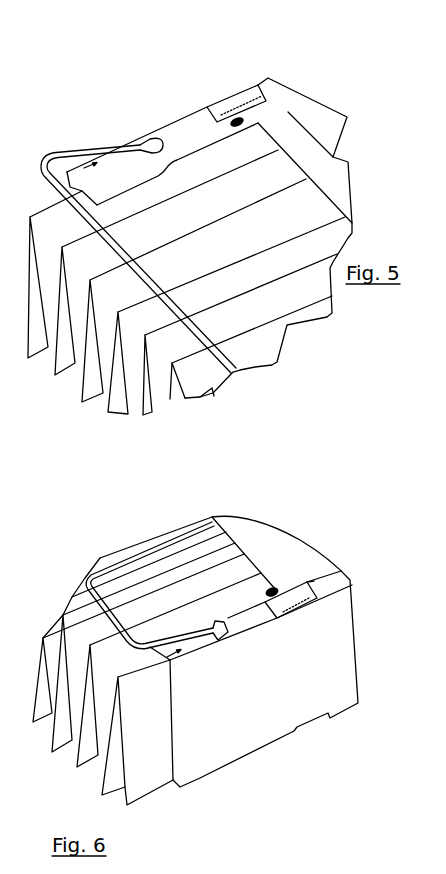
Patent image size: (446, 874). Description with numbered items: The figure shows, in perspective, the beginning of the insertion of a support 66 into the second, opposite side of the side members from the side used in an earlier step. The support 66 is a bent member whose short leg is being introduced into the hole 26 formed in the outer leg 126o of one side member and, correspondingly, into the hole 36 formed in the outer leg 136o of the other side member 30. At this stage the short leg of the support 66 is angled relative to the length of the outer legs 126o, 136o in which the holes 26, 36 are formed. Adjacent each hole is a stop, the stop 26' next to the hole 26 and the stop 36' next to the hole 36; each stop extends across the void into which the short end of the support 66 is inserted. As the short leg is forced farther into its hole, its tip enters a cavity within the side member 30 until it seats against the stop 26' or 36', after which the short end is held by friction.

In FIG. 5, the hole 26 is at (190, 241).
In FIG. 5, the stop 26' is at (236, 69).
In FIG. 5, the outer leg 126o is at (175, 133).
In FIG. 5, the support 66 is at (168, 292).
In FIG. 6, the support 66 is at (88, 578).
In FIG. 6, the hole 36 is at (195, 666).
In FIG. 6, the stop 36' is at (299, 565).
In FIG. 6, the outer leg 136o is at (252, 614).
In FIG. 6, the side member 30 is at (327, 668).